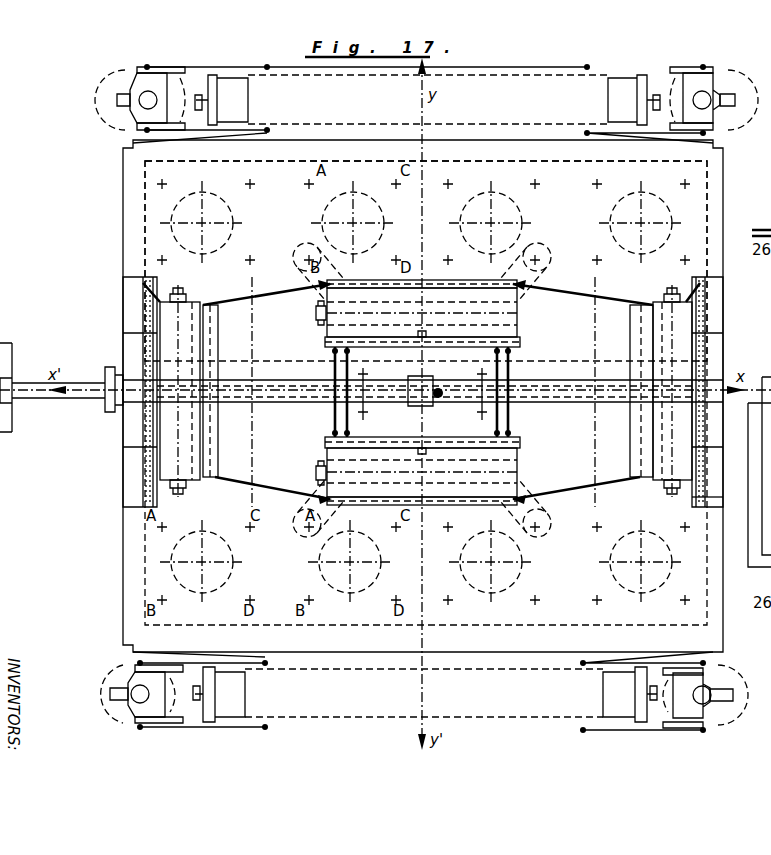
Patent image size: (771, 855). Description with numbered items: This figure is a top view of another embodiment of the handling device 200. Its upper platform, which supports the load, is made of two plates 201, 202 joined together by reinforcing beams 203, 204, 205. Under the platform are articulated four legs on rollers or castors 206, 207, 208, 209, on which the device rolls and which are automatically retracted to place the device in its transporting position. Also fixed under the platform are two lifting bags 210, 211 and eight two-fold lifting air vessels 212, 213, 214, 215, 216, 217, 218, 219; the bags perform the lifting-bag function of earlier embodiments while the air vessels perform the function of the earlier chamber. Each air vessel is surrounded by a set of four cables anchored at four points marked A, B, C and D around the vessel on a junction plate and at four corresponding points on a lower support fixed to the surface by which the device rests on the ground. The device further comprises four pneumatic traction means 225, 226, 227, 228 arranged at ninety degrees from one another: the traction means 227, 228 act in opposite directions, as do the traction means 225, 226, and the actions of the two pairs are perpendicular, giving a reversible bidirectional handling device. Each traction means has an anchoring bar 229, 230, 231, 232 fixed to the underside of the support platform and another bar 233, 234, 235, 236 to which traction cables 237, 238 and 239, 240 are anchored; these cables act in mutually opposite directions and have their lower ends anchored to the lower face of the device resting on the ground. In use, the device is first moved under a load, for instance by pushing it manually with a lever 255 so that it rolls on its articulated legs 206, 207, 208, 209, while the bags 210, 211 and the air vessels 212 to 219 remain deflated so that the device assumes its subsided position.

The handling device 200 is at (100, 624).
The plate 201 is at (710, 593).
The plate 202 is at (708, 254).
The reinforcing beam 203 is at (697, 500).
The reinforcing beam 204 is at (150, 332).
The reinforcing beam 205 is at (572, 400).
The leg on rollers 206 is at (722, 718).
The leg on rollers 207 is at (175, 728).
The leg on rollers 208 is at (232, 80).
The leg on rollers 209 is at (722, 82).
The lifting bag 210 is at (612, 716).
The lifting bag 211 is at (628, 84).
The two-fold lifting air vessel 212 is at (233, 564).
The two-fold lifting air vessel 213 is at (378, 558).
The two-fold lifting air vessel 214 is at (518, 564).
The two-fold lifting air vessel 215 is at (671, 558).
The two-fold lifting air vessel 216 is at (232, 224).
The two-fold lifting air vessel 217 is at (380, 222).
The two-fold lifting air vessel 218 is at (519, 224).
The two-fold lifting air vessel 219 is at (670, 222).
The pneumatic traction means 225 is at (330, 455).
The pneumatic traction means 226 is at (330, 339).
The pneumatic traction means 227 is at (190, 300).
The pneumatic traction means 228 is at (660, 298).
The anchoring bar 229 is at (350, 505).
The anchoring bar 230 is at (350, 288).
The anchoring bar 231 is at (152, 293).
The anchoring bar 232 is at (690, 288).
The bar 233 is at (360, 435).
The bar 234 is at (462, 342).
The bar 235 is at (213, 352).
The bar 236 is at (632, 355).
The traction cable 237 is at (333, 366).
The traction cable 238 is at (350, 372).
The traction cable 239 is at (278, 294).
The traction cable 240 is at (572, 298).
The lever 255 is at (22, 398).